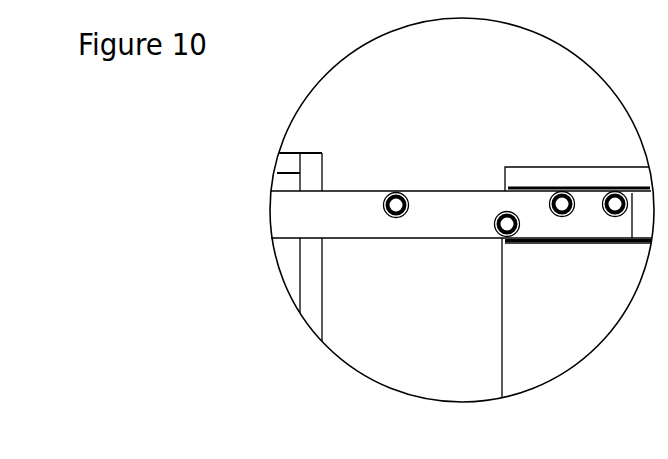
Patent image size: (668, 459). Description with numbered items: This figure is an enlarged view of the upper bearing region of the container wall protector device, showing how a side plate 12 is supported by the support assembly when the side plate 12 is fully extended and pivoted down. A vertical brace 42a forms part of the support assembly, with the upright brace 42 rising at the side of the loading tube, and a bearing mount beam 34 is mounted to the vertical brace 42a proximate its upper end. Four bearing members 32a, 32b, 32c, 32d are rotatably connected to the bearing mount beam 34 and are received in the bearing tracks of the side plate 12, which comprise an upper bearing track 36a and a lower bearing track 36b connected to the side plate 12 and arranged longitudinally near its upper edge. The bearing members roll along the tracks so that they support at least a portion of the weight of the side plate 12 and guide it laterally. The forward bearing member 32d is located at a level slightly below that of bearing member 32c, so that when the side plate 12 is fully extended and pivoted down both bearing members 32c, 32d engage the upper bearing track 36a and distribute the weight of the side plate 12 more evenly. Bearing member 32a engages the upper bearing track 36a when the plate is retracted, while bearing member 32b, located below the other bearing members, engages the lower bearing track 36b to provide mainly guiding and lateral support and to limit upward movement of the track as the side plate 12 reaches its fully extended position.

The side plate 12 is at (541, 167).
The bearing member 32a is at (384, 199).
The bearing member 32b is at (496, 215).
The bearing member 32c is at (550, 215).
The forward bearing member 32d is at (605, 214).
The bearing mount beam 34 is at (327, 223).
The upper bearing track 36a is at (590, 188).
The lower bearing track 36b is at (507, 243).
The vertical brace 42 is at (323, 280).
The vertical brace 42a is at (322, 163).